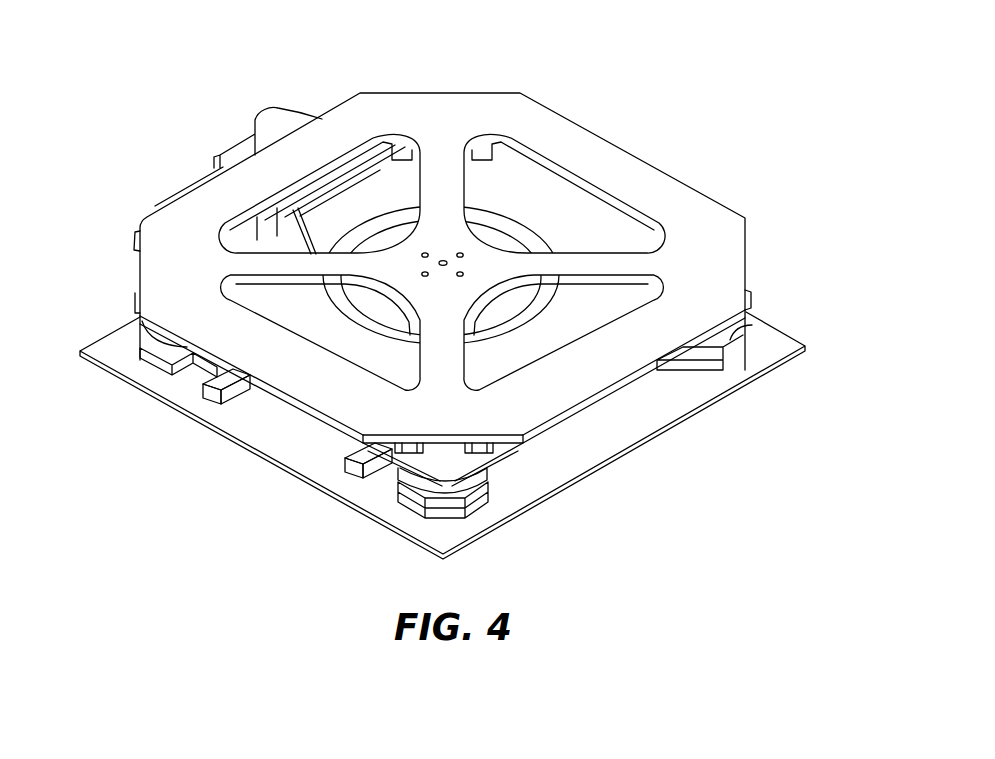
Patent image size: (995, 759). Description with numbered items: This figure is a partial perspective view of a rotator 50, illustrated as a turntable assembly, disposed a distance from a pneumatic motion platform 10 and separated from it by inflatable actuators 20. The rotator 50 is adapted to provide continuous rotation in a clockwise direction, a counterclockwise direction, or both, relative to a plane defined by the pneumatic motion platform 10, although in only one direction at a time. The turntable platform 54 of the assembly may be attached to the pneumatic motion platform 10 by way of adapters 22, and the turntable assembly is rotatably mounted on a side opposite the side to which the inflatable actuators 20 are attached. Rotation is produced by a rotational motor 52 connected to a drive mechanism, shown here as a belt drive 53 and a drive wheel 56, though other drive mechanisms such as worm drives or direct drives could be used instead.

The pneumatic motion platform 10 is at (670, 440).
The inflatable actuators 20 is at (147, 325).
The adapters 22 is at (140, 334).
The rotator 50 is at (266, 395).
The rotational motor 52 is at (280, 120).
The belt drive 53 is at (230, 246).
The turntable platform 54 is at (370, 408).
The drive wheel 56 is at (358, 322).